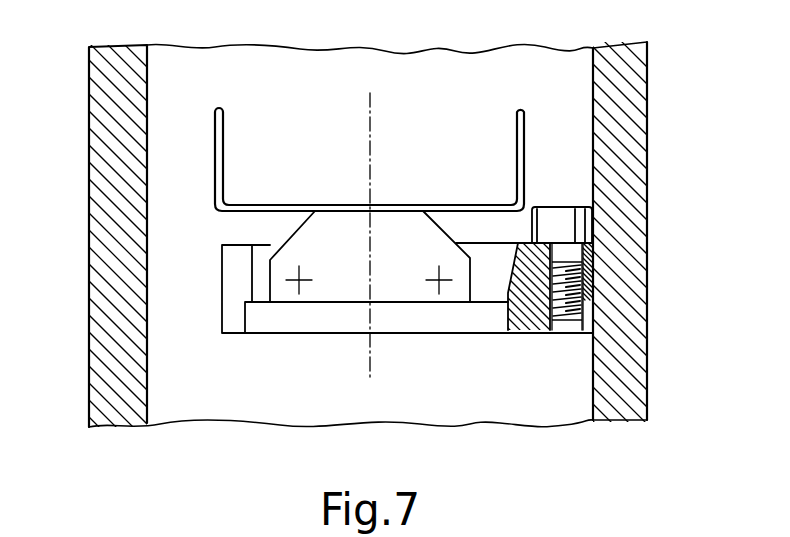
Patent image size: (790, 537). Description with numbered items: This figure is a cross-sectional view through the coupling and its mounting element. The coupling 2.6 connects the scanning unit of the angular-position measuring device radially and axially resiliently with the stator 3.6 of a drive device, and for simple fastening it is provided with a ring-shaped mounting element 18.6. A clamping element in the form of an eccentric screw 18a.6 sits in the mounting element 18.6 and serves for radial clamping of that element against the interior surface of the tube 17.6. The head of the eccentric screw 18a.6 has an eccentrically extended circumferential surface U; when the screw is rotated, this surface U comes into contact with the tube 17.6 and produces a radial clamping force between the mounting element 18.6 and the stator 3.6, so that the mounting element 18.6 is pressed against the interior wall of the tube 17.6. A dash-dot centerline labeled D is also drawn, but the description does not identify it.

The stator 3.6 is at (100, 138).
The coupling 2.6 is at (263, 205).
The tube 17.6 is at (147, 278).
The mounting element 18.6 is at (508, 312).
The eccentric screw 18a.6 is at (580, 268).
The center axis D is at (371, 110).
The eccentrically extended circumferential surface U is at (532, 228).